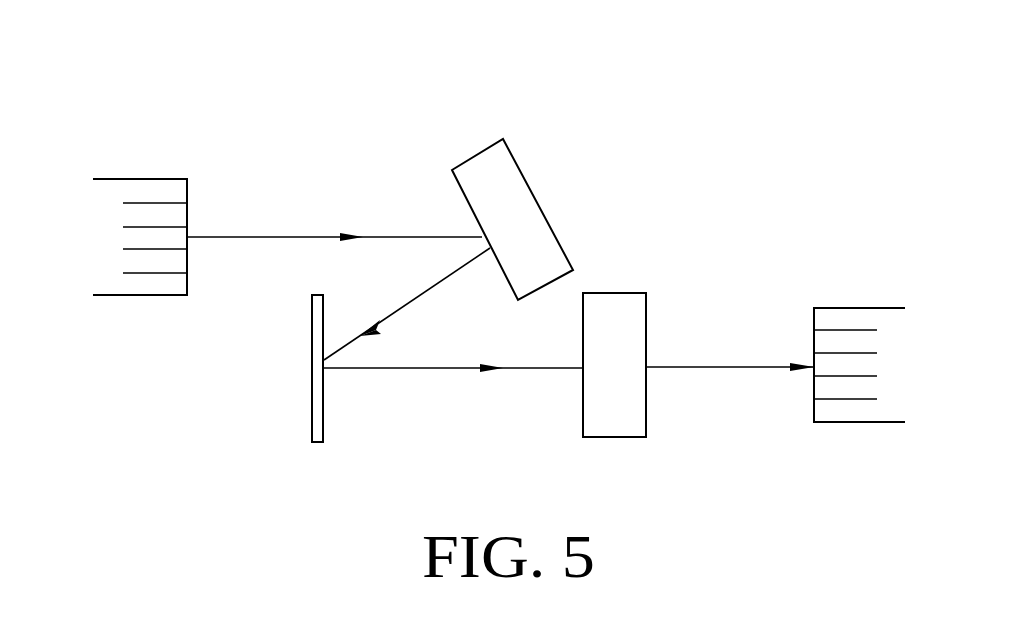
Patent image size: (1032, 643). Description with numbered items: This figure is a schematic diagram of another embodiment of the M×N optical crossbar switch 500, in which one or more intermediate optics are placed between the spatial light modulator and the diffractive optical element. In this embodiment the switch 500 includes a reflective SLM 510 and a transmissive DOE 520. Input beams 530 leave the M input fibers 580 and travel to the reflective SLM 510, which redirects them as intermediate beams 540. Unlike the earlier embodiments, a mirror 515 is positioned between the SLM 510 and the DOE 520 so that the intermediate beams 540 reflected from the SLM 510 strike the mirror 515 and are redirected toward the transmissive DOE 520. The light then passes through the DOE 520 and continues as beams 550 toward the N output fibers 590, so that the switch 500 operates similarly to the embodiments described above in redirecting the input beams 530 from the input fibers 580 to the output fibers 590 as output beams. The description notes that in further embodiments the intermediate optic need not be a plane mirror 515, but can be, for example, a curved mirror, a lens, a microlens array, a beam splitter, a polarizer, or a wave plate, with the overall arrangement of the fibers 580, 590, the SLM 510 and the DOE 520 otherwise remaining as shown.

The M×N optical crossbar switch 500 is at (578, 100).
The input fibers 580 is at (143, 179).
The input beams 530 is at (262, 237).
The reflective SLM 510 is at (478, 155).
The intermediate beams 540 is at (418, 295).
The mirror 515 is at (312, 415).
The transmissive DOE 520 is at (583, 395).
The output light beam 550 is at (692, 367).
The output fibers 590 is at (850, 422).